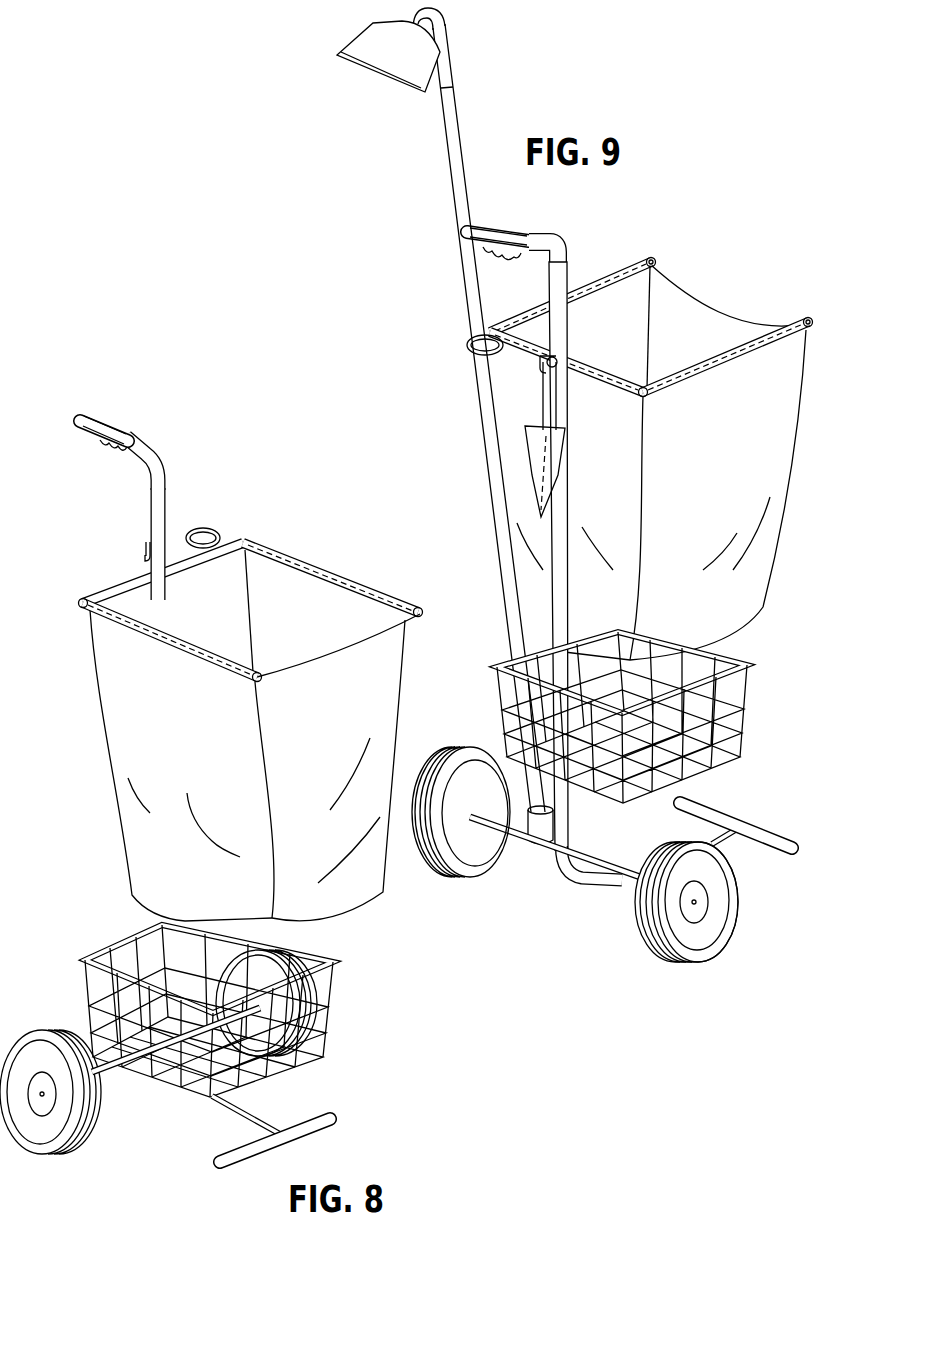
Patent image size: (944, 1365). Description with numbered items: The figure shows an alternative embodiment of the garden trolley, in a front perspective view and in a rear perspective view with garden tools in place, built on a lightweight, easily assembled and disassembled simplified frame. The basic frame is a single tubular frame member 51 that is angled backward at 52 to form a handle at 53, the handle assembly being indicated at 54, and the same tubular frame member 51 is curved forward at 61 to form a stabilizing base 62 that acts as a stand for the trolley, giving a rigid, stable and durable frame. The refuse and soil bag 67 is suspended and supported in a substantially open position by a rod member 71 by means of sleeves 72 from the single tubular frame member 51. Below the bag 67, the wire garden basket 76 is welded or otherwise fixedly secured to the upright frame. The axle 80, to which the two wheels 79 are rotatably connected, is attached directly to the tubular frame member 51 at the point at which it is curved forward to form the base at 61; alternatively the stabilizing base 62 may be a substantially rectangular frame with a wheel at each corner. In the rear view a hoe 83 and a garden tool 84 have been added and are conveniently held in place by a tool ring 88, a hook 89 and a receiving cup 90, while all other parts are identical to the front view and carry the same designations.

In FIG. 8, the tubular frame member 51 is at (165, 485).
In FIG. 9, the tubular frame member 51 is at (568, 600).
In FIG. 8, the backward angle of tubular frame member 52 is at (148, 442).
In FIG. 9, the backward angle of tubular frame member 52 is at (543, 254).
In FIG. 8, the handle 53 is at (108, 422).
In FIG. 9, the handle 53 is at (498, 244).
In FIG. 8, the handle assembly 54 is at (127, 432).
In FIG. 9, the base 61 is at (570, 863).
In FIG. 8, the stabilizing base 62 is at (250, 1123).
In FIG. 9, the stabilizing base 62 is at (640, 868).
In FIG. 8, the refuse bag 67 is at (112, 750).
In FIG. 9, the refuse bag 67 is at (773, 462).
In FIG. 8, the rod member 71 is at (103, 584).
In FIG. 8, the sleeves 72 is at (323, 583).
In FIG. 9, the sleeves 72 is at (713, 373).
In FIG. 8, the garden basket 76 is at (333, 988).
In FIG. 9, the garden basket 76 is at (748, 687).
In FIG. 8, the wheels 79 is at (98, 1127).
In FIG. 9, the wheels 79 is at (676, 957).
In FIG. 8, the axle 80 is at (107, 1073).
In FIG. 9, the axle 80 is at (630, 878).
In FIG. 9, the hoe 83 is at (455, 108).
In FIG. 9, the garden tool 84 is at (533, 460).
In FIG. 8, the tool ring 88 is at (207, 527).
In FIG. 9, the tool ring 88 is at (467, 346).
In FIG. 8, the hook 89 is at (138, 554).
In FIG. 9, the hook 89 is at (547, 373).
In FIG. 9, the receiving cup 90 is at (550, 827).